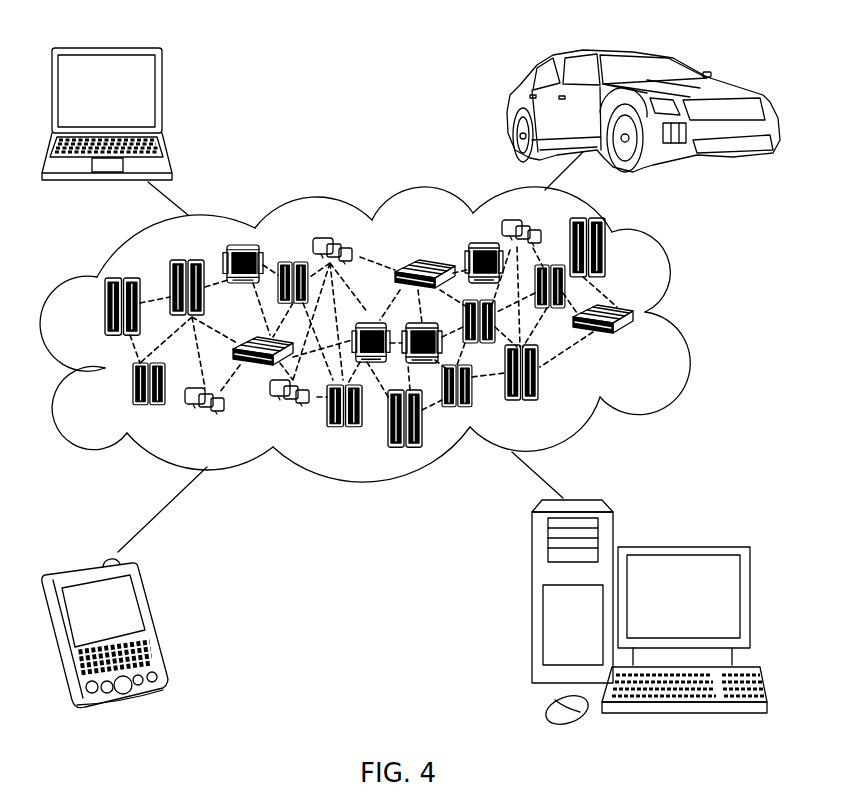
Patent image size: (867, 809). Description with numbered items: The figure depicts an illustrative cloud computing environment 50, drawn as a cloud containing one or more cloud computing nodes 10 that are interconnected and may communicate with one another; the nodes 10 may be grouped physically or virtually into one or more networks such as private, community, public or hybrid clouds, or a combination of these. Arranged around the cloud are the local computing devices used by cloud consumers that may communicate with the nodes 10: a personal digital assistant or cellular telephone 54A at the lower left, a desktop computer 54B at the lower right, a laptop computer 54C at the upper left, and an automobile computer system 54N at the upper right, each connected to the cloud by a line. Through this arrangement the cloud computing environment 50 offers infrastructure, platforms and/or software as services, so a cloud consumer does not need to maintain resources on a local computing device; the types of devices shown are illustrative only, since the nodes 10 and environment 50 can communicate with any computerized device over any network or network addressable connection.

The cloud computing node 10 is at (641, 341).
The cloud computing environment 50 is at (683, 313).
The personal digital assistant or cellular telephone 54A is at (153, 622).
The desktop computer 54B is at (680, 545).
The laptop computer 54C is at (163, 94).
The automobile computer system 54N is at (507, 110).